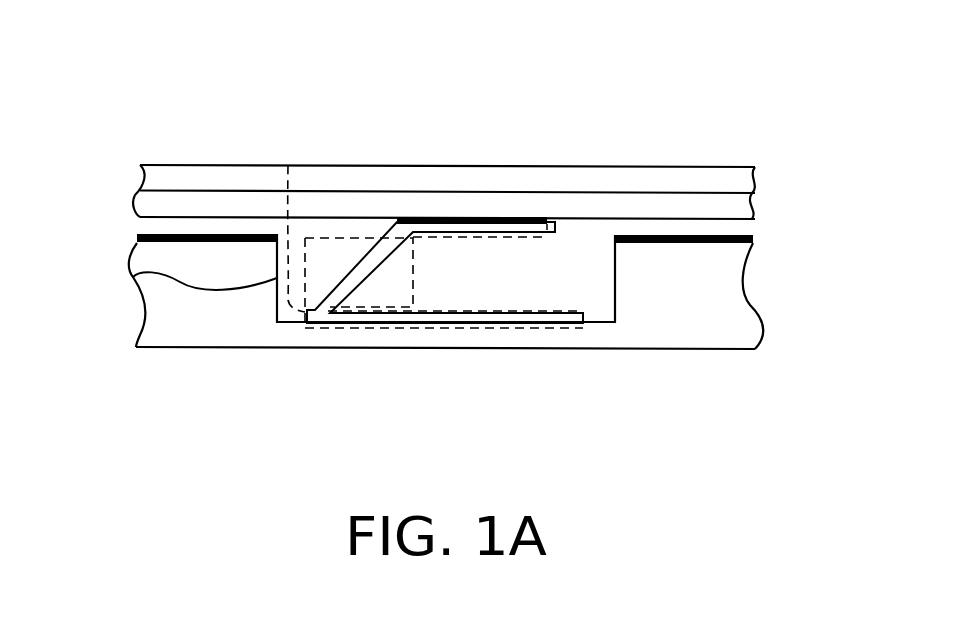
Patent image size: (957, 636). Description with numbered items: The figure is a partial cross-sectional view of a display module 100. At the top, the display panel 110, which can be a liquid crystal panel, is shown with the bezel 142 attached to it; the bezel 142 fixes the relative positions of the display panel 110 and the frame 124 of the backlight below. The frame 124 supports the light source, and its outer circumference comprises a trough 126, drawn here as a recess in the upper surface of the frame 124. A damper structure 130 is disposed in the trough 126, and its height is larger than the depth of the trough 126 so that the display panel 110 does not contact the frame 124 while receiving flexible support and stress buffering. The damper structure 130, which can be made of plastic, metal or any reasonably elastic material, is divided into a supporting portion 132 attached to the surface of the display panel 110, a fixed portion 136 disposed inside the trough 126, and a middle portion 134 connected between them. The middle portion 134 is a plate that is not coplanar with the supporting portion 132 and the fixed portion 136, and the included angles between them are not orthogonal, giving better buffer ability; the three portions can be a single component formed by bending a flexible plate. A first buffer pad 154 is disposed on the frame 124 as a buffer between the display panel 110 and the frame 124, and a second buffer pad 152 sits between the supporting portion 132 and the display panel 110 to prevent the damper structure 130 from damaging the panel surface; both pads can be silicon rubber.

The display module 100 is at (487, 450).
The display panel 110 is at (743, 207).
The frame 124 is at (742, 297).
The trough 126 is at (133, 277).
The damper structure 130 is at (420, 171).
The supporting portion 132 is at (397, 222).
The middle portion 134 is at (336, 238).
The fixed portion 136 is at (281, 195).
The bezel 142 is at (743, 181).
The second buffer pad 152 is at (478, 217).
The first buffer pad 154 is at (677, 236).